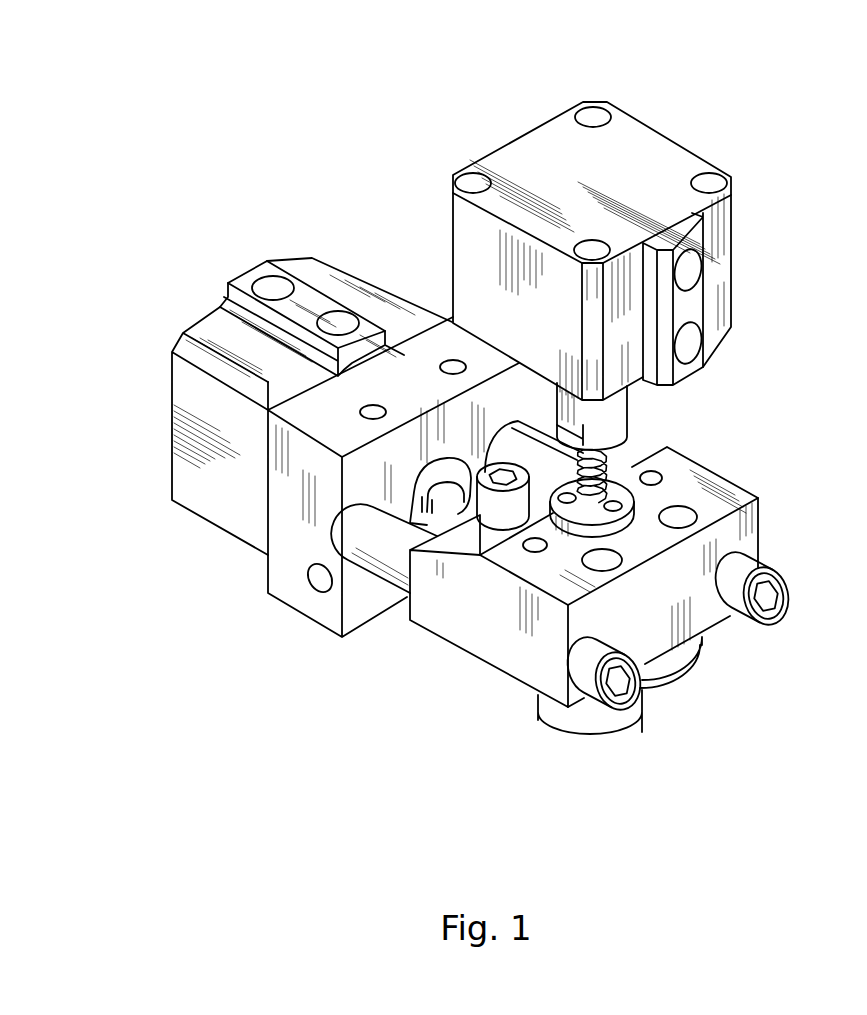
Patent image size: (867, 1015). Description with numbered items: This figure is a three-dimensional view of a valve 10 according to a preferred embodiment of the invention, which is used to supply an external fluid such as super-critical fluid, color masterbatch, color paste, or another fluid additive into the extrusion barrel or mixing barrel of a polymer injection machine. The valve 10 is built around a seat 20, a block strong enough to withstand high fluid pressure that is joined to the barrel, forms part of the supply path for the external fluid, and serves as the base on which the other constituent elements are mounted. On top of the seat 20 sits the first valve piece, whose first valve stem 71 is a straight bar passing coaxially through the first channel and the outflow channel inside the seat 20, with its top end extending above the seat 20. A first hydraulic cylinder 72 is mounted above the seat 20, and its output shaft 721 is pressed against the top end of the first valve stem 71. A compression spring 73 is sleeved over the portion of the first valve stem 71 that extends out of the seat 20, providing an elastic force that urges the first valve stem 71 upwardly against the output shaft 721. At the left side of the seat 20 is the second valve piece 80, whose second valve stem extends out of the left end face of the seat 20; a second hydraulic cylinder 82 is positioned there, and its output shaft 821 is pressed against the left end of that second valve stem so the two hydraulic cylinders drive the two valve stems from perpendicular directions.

The valve 10 is at (448, 414).
The seat 20 is at (515, 658).
The first valve stem 71 is at (635, 497).
The first hydraulic cylinder 72 is at (649, 156).
The output shaft 721 is at (608, 420).
The compression spring 73 is at (612, 462).
The second valve piece 80 is at (292, 250).
The second hydraulic cylinder 82 is at (195, 437).
The output shaft 821 is at (435, 479).